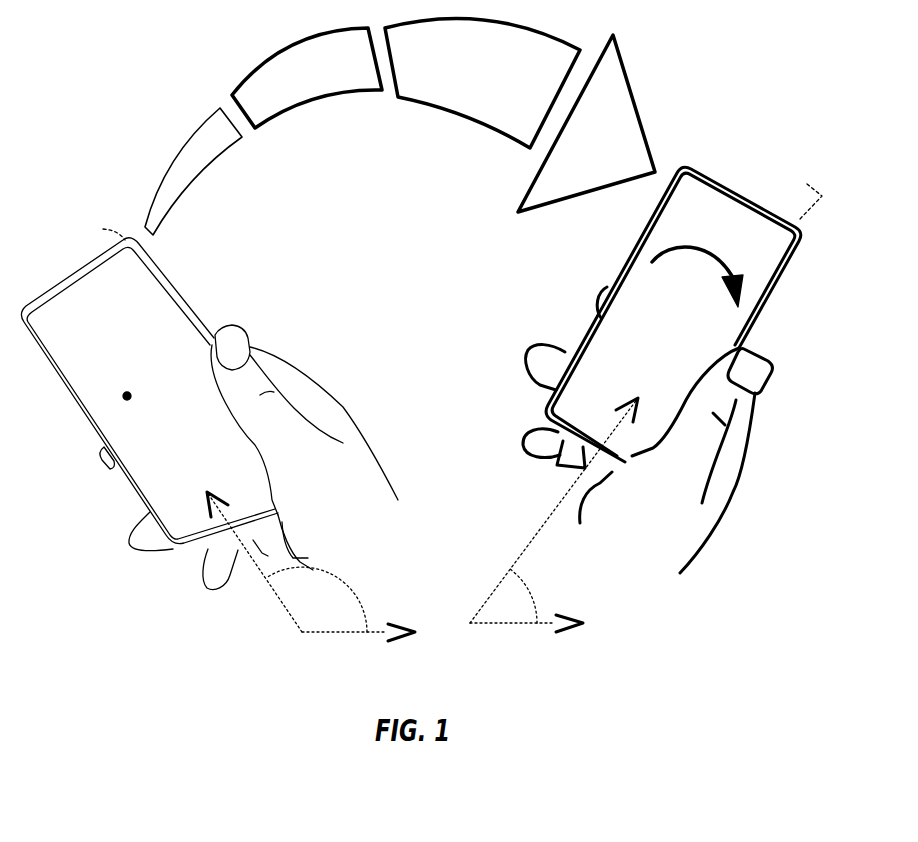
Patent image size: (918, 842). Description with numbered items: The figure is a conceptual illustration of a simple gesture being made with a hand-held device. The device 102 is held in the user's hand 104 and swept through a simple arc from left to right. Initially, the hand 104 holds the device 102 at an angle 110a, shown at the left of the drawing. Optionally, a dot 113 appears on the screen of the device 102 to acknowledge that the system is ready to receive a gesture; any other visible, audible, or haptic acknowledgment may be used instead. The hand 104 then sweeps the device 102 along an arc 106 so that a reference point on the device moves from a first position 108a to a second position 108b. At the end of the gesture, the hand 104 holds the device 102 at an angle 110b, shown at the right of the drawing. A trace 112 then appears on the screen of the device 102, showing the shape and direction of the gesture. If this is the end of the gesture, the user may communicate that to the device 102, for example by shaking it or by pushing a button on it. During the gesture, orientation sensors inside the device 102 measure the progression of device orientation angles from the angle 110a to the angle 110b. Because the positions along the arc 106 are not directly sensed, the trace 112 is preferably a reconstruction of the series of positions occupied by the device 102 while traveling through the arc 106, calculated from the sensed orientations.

The device 102 is at (156, 332).
The hand 104 is at (360, 512).
The arc 106 is at (275, 47).
The position 108a is at (91, 229).
The position 108b is at (792, 195).
The angle 110a is at (311, 566).
The angle 110b is at (554, 515).
The trace 112 is at (772, 300).
The dot 113 is at (117, 398).